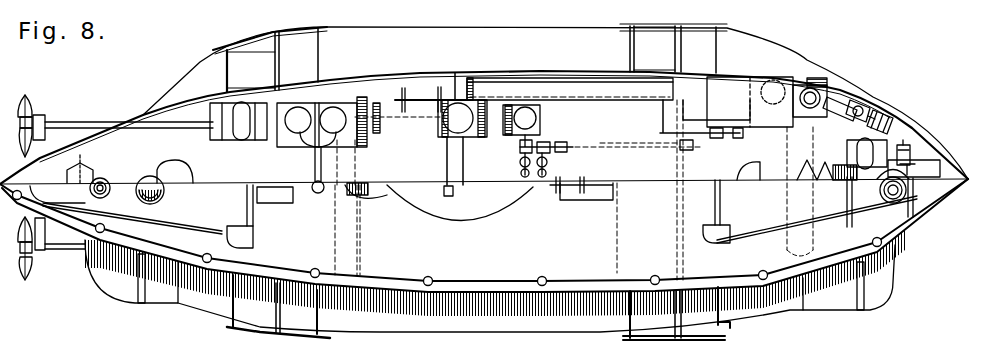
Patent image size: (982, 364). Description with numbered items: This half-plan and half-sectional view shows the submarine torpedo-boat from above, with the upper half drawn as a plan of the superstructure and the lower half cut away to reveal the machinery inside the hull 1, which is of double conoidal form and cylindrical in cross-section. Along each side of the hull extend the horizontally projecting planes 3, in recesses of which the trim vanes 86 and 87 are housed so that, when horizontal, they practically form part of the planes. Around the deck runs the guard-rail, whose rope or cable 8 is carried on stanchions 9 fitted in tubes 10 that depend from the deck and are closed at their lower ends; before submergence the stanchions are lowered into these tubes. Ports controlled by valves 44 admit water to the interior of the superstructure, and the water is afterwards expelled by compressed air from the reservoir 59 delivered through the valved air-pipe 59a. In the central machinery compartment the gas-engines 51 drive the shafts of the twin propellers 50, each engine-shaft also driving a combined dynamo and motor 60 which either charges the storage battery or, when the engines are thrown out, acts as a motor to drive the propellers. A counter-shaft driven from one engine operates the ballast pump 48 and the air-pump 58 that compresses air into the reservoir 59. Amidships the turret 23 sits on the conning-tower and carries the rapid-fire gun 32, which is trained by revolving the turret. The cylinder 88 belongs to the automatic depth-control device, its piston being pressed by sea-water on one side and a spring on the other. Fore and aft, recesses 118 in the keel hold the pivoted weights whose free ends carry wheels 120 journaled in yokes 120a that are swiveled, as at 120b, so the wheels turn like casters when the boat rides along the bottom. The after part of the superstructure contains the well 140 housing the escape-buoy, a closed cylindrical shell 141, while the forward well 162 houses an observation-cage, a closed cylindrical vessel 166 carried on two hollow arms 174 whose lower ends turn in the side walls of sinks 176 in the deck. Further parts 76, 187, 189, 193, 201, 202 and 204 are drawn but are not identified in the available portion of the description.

The hull 1 is at (197, 62).
The planes 3 is at (470, 58).
The rope or cable 8 is at (497, 281).
The stanchions 9 is at (542, 277).
The tubes 10 is at (612, 14).
The turret 23 is at (439, 203).
The rapid-fire gun 32 is at (539, 193).
The valves 44 is at (362, 7).
The pump 48 is at (601, 141).
The twin propellers 50 is at (115, 183).
The gas-engines 51 is at (318, 150).
The air-pump 58 is at (462, 148).
The reservoir 59 is at (570, 89).
The valved air-pipe 59a is at (570, 94).
The combined dynamo and motor 60 is at (240, 134).
The ballast tank 76 is at (490, 286).
The vane 86 is at (676, 183).
The vane 87 is at (278, 195).
The cylinder 88 is at (412, 95).
The recesses 118 is at (893, 158).
The wheels 120 is at (135, 4).
The yokes 120a is at (677, 7).
The swivel 120b is at (174, 15).
The well 140 is at (172, 191).
The closed cylindrical shell 141 is at (160, 195).
The well 162 is at (485, 247).
The closed cylindrical vessel 166 is at (485, 195).
The hollow arms 174 is at (200, 232).
The sinks 176 is at (256, 242).
The hatch cover 187 is at (599, 4).
The torpedo chamber 189 is at (696, 113).
The torpedo tube ring 193 is at (803, 88).
The arm 201 is at (845, 118).
The joint 202 is at (870, 101).
The cylinder 204 is at (891, 115).